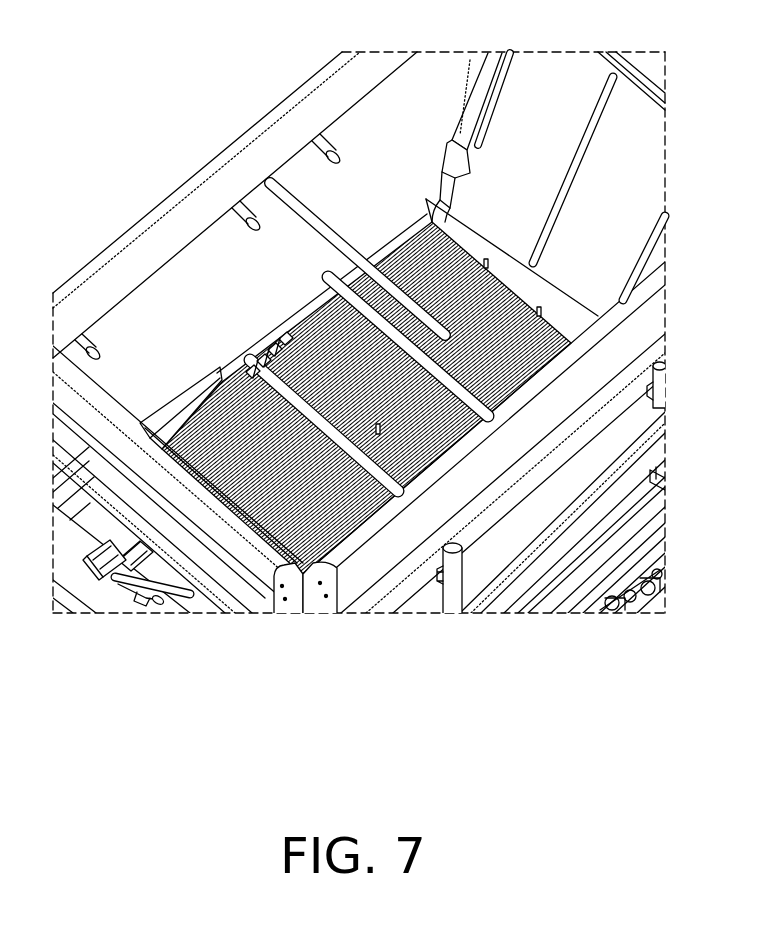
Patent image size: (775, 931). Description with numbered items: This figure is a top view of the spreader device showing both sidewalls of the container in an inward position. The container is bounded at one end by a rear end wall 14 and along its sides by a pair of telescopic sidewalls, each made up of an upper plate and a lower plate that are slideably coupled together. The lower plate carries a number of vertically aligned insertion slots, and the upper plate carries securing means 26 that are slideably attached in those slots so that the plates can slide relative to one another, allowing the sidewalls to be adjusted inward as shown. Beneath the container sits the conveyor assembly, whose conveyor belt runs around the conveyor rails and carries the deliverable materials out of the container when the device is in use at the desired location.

The rear end wall 14 is at (172, 312).
The securing means 26 is at (497, 122).